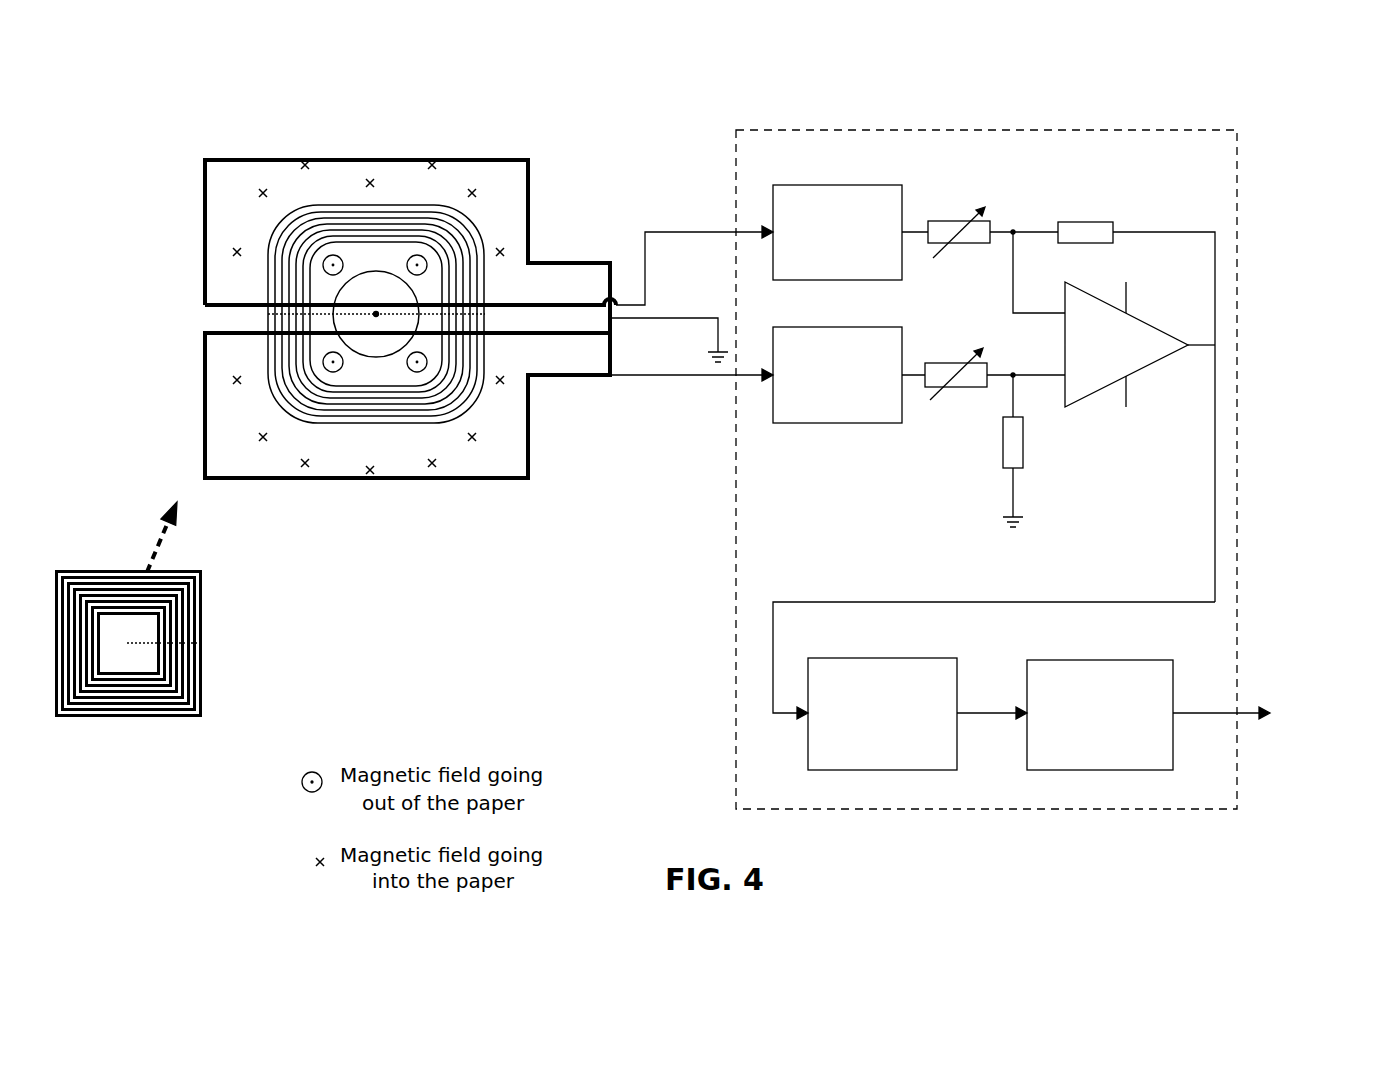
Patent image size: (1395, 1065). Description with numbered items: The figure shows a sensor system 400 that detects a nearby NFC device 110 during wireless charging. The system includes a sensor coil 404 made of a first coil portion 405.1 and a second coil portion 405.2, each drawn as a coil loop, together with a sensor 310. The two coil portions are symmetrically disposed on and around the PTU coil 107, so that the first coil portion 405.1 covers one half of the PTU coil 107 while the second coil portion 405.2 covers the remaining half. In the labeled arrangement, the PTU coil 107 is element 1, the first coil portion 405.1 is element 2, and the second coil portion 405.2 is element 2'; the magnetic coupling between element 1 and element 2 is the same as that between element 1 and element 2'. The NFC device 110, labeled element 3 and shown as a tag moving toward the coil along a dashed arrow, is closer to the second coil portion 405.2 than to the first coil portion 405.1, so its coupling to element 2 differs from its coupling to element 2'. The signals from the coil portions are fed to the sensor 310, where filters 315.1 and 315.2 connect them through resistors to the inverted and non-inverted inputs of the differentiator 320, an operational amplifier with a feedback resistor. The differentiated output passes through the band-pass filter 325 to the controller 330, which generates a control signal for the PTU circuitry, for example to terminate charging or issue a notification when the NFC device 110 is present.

The sensor system 400 is at (1318, 98).
The sensor coil 404 is at (170, 158).
The first coil portion 405.1 is at (205, 286).
The second coil portion 405.2 is at (455, 478).
The PTU coil 107 is at (376, 314).
The element 1 (PTU coil) 1 is at (376, 314).
The element 2 (first coil portion) 2 is at (167, 234).
The element 2' (second coil portion) 2' is at (163, 416).
The element 3 (NFC device) 3 is at (152, 644).
The NFC device 110 is at (203, 655).
The sensor 310 is at (1003, 469).
The first filter 315.1 is at (837, 232).
The second filter 315.2 is at (837, 375).
The differentiator 320 is at (1163, 360).
The filter 325 is at (882, 714).
The controller 330 is at (1100, 715).